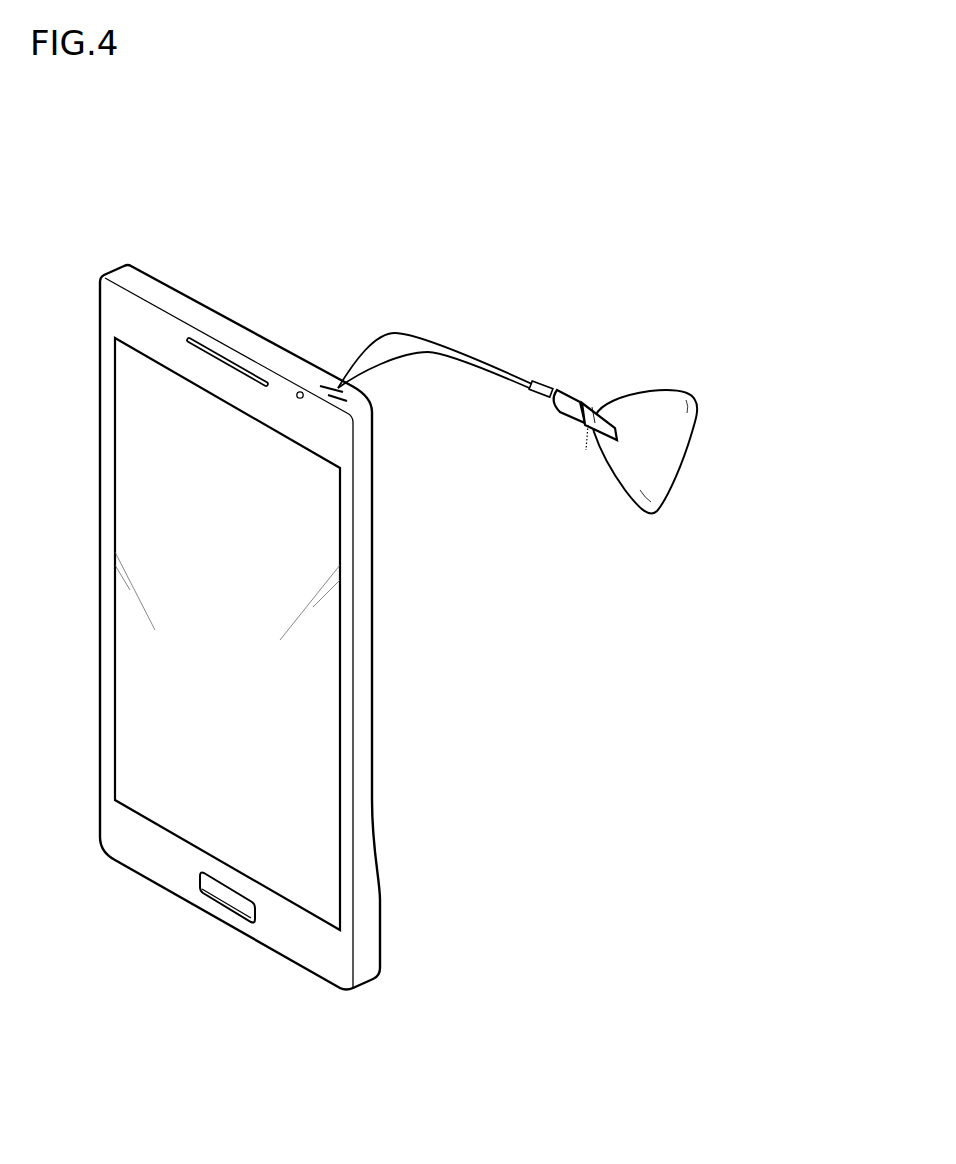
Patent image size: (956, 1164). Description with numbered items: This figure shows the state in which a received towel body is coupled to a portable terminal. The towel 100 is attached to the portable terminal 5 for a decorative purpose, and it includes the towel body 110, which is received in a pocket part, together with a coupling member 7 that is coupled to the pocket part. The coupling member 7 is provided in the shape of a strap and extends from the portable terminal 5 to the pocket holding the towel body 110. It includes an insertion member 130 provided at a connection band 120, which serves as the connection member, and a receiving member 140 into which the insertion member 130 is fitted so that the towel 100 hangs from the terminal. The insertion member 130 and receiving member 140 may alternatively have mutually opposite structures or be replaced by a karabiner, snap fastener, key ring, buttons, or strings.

The portable terminal 5 is at (317, 745).
The coupling member 7 is at (549, 437).
The towel 100 is at (686, 416).
The towel body 110 is at (663, 472).
The connection band 120 is at (593, 408).
The insertion member 130 is at (586, 450).
The receiving member 140 is at (570, 390).